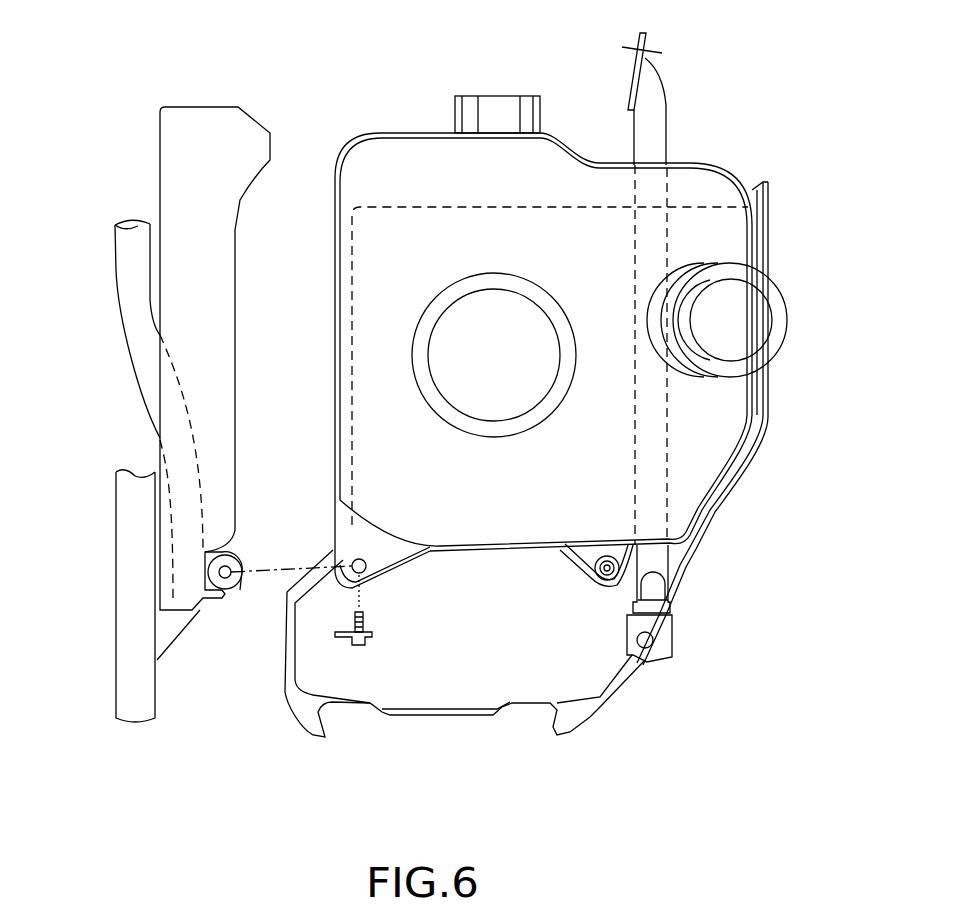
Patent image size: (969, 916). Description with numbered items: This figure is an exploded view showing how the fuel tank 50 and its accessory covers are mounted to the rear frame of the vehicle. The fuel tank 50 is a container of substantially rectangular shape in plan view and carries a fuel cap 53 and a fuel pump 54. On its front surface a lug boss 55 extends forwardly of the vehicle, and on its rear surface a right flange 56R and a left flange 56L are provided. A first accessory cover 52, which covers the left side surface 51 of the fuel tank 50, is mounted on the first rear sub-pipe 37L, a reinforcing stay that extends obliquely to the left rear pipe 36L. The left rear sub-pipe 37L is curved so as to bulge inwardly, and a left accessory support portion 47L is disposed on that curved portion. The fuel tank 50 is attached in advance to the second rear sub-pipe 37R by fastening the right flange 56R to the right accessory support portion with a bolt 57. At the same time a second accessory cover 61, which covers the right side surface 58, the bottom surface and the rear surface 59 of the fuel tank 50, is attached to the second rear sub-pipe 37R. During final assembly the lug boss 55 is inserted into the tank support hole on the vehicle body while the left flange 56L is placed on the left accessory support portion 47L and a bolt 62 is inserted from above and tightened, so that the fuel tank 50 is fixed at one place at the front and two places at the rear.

The fuel tank 50 is at (552, 384).
The left side surface 51 is at (335, 392).
The first accessory cover 52 is at (173, 182).
The fuel cap 53 is at (755, 318).
The fuel pump 54 is at (493, 396).
The lug boss 55 is at (486, 110).
The left flange 56L is at (387, 560).
The right flange 56R is at (603, 588).
The bolt 57 is at (612, 560).
The right side surface 58 is at (768, 402).
The rear surface 59 is at (493, 553).
The second accessory cover 61 is at (600, 695).
The bolt 62 is at (352, 642).
The left rear pipe 36L is at (135, 580).
The first rear sub-pipe 37L is at (143, 377).
The second rear sub-pipe 37R is at (652, 133).
The left accessory support portion 47L is at (233, 580).